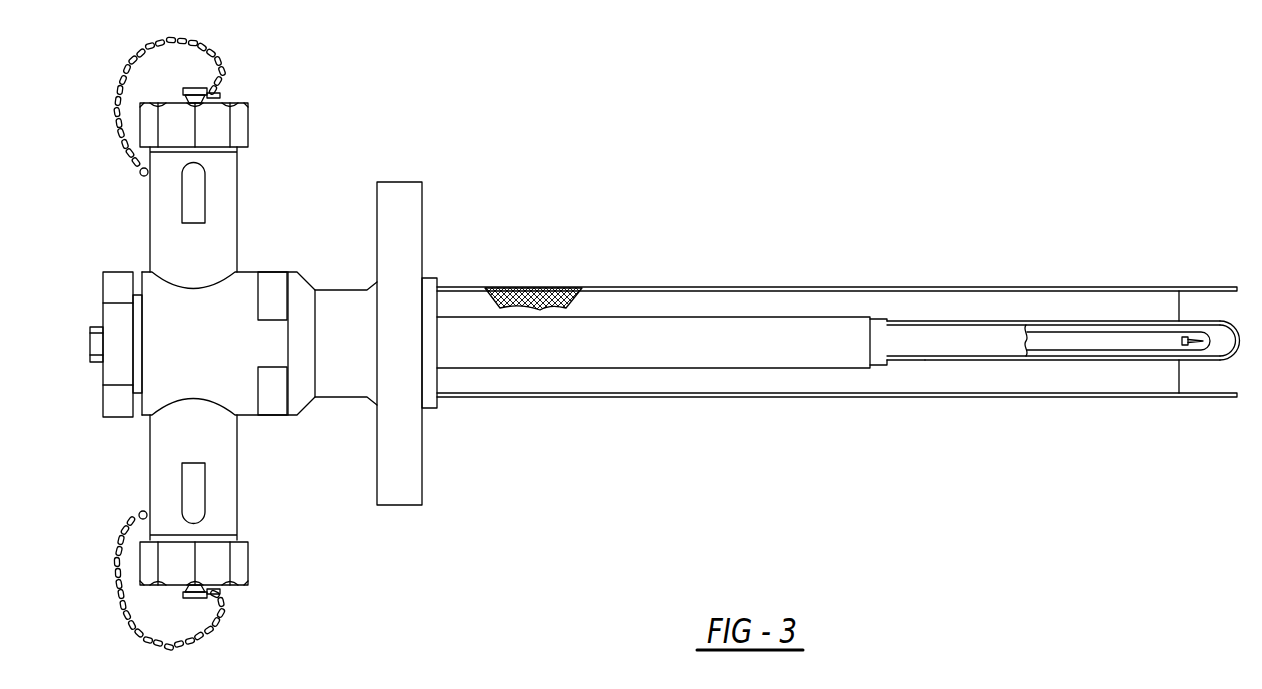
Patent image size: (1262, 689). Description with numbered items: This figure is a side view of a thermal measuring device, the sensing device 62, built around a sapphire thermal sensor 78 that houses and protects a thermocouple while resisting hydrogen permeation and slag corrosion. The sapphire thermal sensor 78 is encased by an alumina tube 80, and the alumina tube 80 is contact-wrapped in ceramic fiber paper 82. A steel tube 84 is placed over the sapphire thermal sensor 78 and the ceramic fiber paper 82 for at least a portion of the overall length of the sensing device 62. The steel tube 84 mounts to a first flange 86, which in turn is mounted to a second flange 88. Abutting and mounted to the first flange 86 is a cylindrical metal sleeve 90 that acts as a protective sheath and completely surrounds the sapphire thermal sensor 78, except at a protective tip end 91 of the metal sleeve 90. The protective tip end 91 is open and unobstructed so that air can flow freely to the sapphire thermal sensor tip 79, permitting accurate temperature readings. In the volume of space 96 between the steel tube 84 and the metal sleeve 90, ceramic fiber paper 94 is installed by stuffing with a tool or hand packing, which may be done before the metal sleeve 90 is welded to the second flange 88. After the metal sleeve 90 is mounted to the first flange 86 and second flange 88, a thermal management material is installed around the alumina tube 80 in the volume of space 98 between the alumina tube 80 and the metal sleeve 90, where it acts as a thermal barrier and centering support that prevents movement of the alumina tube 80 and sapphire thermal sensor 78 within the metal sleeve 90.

The sensing device 62 is at (340, 523).
The sapphire thermal sensor 78 is at (1123, 339).
The sapphire thermal sensor tip 79 is at (1238, 353).
The alumina tube 80 is at (963, 341).
The ceramic fiber paper 82 is at (922, 362).
The steel tube 84 is at (518, 345).
The first flange 86 is at (440, 275).
The second flange 88 is at (400, 182).
The metal sleeve 90 is at (683, 398).
The protective tip end 91 is at (1236, 286).
The ceramic fiber paper 94 is at (540, 296).
The volume of space 96 is at (638, 299).
The volume of space 98 is at (1083, 300).